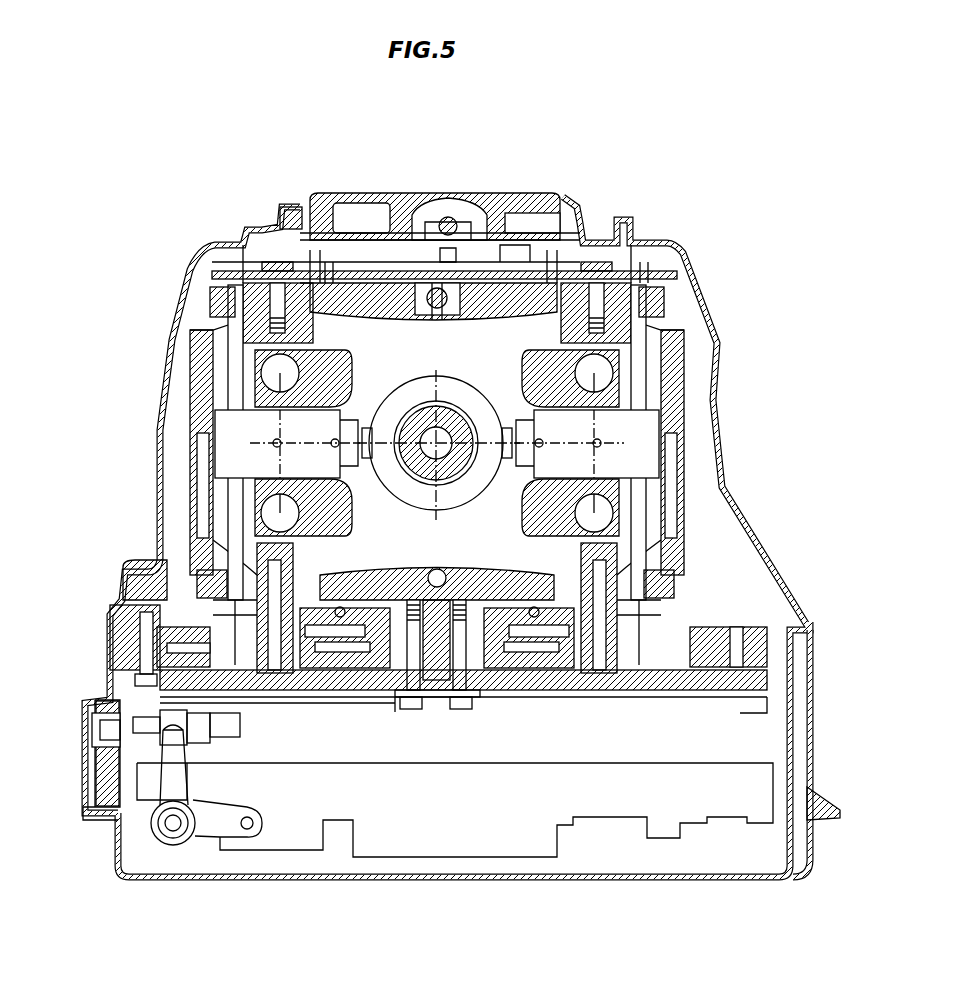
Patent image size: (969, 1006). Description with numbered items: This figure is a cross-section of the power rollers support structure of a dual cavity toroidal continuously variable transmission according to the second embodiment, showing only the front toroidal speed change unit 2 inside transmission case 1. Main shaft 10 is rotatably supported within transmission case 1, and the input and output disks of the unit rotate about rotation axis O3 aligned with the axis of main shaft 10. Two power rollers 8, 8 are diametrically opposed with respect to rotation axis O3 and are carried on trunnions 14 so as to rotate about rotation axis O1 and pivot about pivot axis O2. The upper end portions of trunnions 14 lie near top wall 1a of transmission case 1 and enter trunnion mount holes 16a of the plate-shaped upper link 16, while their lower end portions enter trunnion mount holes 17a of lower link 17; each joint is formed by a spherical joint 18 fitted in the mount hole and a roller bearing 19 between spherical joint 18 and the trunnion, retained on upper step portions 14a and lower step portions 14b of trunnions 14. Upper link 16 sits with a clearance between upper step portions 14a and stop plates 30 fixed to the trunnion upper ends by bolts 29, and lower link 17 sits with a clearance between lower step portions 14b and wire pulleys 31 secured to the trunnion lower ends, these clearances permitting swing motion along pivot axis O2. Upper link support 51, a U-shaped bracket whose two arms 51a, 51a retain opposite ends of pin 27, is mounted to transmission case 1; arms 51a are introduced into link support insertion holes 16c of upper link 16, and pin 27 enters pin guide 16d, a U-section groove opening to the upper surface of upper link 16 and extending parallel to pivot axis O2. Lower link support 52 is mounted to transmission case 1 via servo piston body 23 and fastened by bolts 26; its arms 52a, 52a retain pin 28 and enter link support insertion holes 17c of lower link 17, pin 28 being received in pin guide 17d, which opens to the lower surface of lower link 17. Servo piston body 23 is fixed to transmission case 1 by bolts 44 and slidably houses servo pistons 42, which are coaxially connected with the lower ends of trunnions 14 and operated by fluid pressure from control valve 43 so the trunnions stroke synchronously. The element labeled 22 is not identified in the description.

The transmission case 1 is at (164, 326).
The top wall 1a is at (282, 228).
The front toroidal speed change unit 2 is at (552, 255).
The power rollers 8 is at (540, 388).
The main shaft 10 is at (455, 425).
The front trunnions 14 is at (690, 357).
The upper step portions 14a is at (650, 325).
The lower step portions 14b is at (630, 555).
The upper link 16 is at (240, 300).
The trunnion mount holes 16a is at (665, 290).
The link support insertion holes 16c is at (392, 292).
The pin guide 16d is at (437, 205).
The lower link 17 is at (165, 577).
The trunnion mount holes 17a is at (630, 575).
The link support insertion holes 17c is at (400, 567).
The pin guide 17d is at (420, 567).
The spherical joint 18 is at (665, 575).
The roller bearing 19 is at (665, 590).
The cover 22 is at (393, 198).
The servo piston body 23 is at (130, 683).
The bolts 26 is at (412, 708).
The pin 27 is at (440, 320).
The pin 28 is at (445, 575).
The bolts 29 is at (583, 263).
The stop plates 30 is at (640, 273).
The wire pulleys 31 is at (700, 640).
The servo pistons 42 is at (565, 665).
The control valve 43 is at (418, 835).
The bolts 44 is at (143, 690).
The upper link support 51 is at (472, 260).
The arms 51a is at (512, 240).
The lower link support 52 is at (378, 607).
The arms 52a is at (400, 650).
The rotation axis of power rollers O1 is at (412, 460).
The pivot axis of power rollers O2 is at (545, 530).
The rotation axis of input and output disks O3 is at (468, 465).